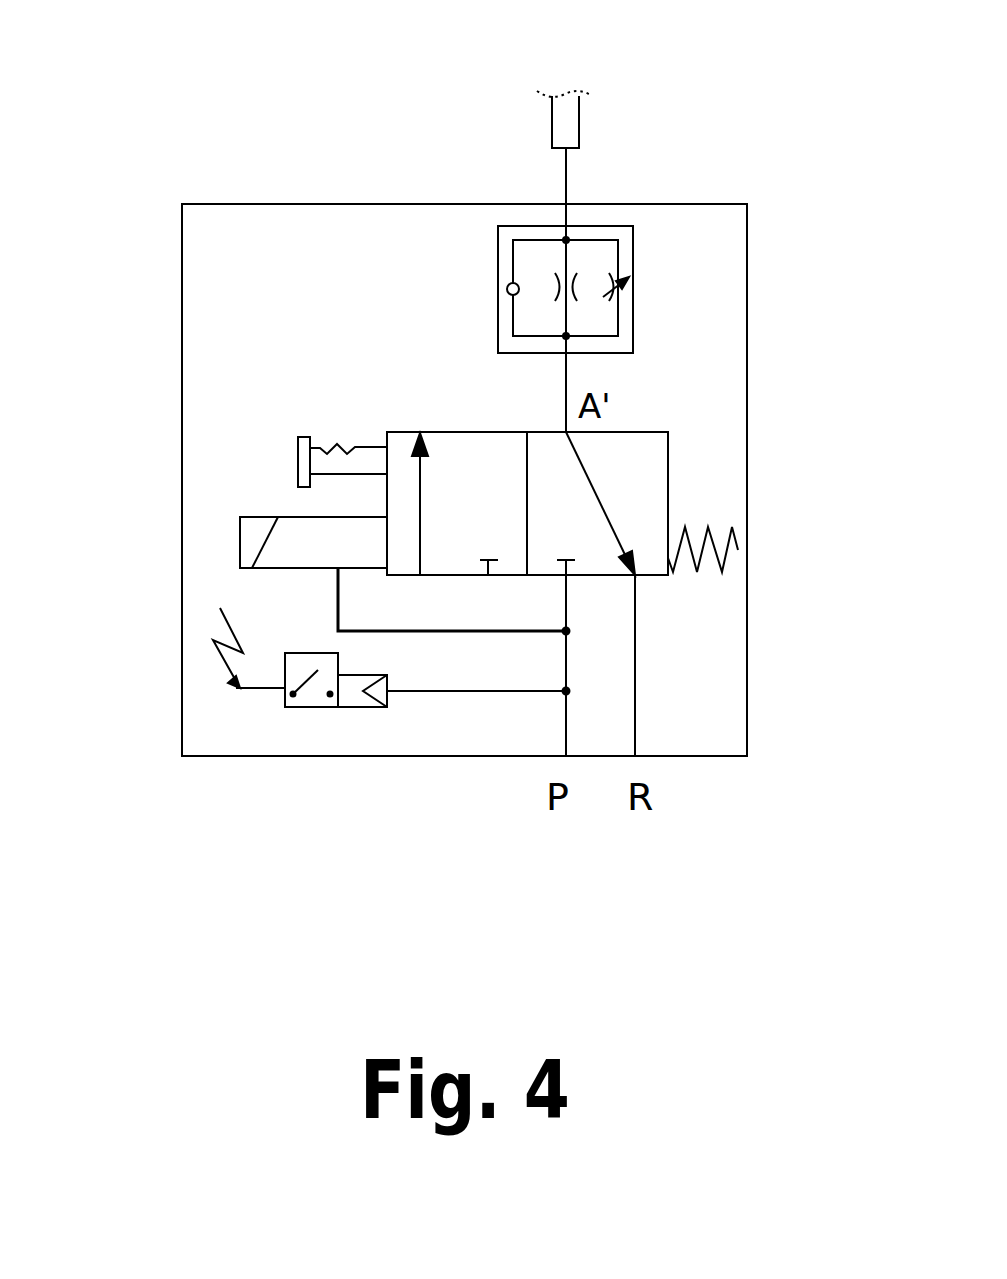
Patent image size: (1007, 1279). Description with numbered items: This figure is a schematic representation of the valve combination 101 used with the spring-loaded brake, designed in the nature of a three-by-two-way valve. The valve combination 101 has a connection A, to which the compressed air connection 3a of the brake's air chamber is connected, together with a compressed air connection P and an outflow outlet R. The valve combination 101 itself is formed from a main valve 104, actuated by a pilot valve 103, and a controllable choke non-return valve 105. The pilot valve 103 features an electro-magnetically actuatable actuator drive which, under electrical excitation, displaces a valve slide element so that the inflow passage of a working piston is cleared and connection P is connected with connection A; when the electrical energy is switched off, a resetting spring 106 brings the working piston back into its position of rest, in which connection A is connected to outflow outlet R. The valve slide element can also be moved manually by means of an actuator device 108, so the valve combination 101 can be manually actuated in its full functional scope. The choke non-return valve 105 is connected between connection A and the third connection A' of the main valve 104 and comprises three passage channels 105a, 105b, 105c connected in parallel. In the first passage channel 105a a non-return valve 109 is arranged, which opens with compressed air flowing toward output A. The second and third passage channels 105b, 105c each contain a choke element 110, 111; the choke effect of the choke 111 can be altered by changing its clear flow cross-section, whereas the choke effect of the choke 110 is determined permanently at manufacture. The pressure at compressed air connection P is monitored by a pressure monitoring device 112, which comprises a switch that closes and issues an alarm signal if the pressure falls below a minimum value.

The valve combination 101 is at (238, 204).
The compressed air connection 3a is at (565, 122).
The connection A is at (566, 193).
The controllable choke non-return valve 105 is at (522, 226).
The first passage channel 105a is at (513, 317).
The second passage channel 105b is at (566, 254).
The third passage channel 105c is at (618, 312).
The non-return valve 109 is at (507, 289).
The choke element 110 is at (558, 281).
The choke element 111 is at (627, 280).
The main valve 104 is at (668, 488).
The resetting spring 106 is at (725, 555).
The actuator device 108 is at (348, 465).
The pilot valve 103 is at (262, 493).
The pressure monitoring device 112 is at (317, 697).